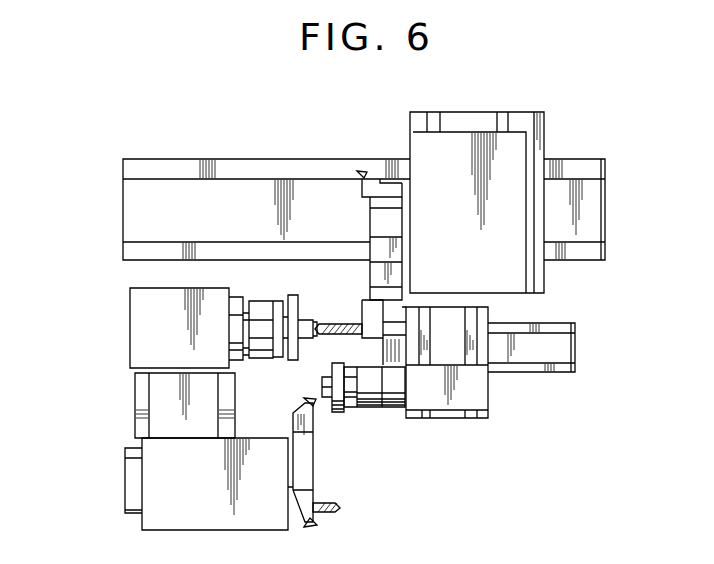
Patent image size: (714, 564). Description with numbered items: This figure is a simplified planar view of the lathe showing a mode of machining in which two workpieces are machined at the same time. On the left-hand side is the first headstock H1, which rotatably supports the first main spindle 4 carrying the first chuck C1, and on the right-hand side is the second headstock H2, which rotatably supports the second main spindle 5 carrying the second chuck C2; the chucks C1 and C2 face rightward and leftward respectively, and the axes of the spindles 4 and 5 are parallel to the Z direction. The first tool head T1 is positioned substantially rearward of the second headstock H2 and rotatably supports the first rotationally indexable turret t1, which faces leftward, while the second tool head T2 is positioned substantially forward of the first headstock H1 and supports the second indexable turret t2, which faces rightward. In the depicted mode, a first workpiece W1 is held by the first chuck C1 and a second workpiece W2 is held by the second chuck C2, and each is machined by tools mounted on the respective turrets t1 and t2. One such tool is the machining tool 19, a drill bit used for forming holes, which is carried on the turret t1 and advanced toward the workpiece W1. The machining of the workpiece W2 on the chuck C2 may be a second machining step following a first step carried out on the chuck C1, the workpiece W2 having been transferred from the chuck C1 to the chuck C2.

The first tool head T1 is at (510, 153).
The first rotationally indexable turret t1 is at (382, 225).
The first headstock H1 is at (152, 315).
The first main spindle 4 is at (242, 311).
The first chuck C1 is at (262, 311).
The workpiece W1 is at (303, 303).
The machining tool 19 is at (343, 362).
The second headstock H2 is at (436, 393).
The workpiece W2 is at (322, 388).
The second chuck C2 is at (358, 410).
The second main spindle 5 is at (385, 408).
The second tool head T2 is at (164, 495).
The second indexable turret t2 is at (306, 470).